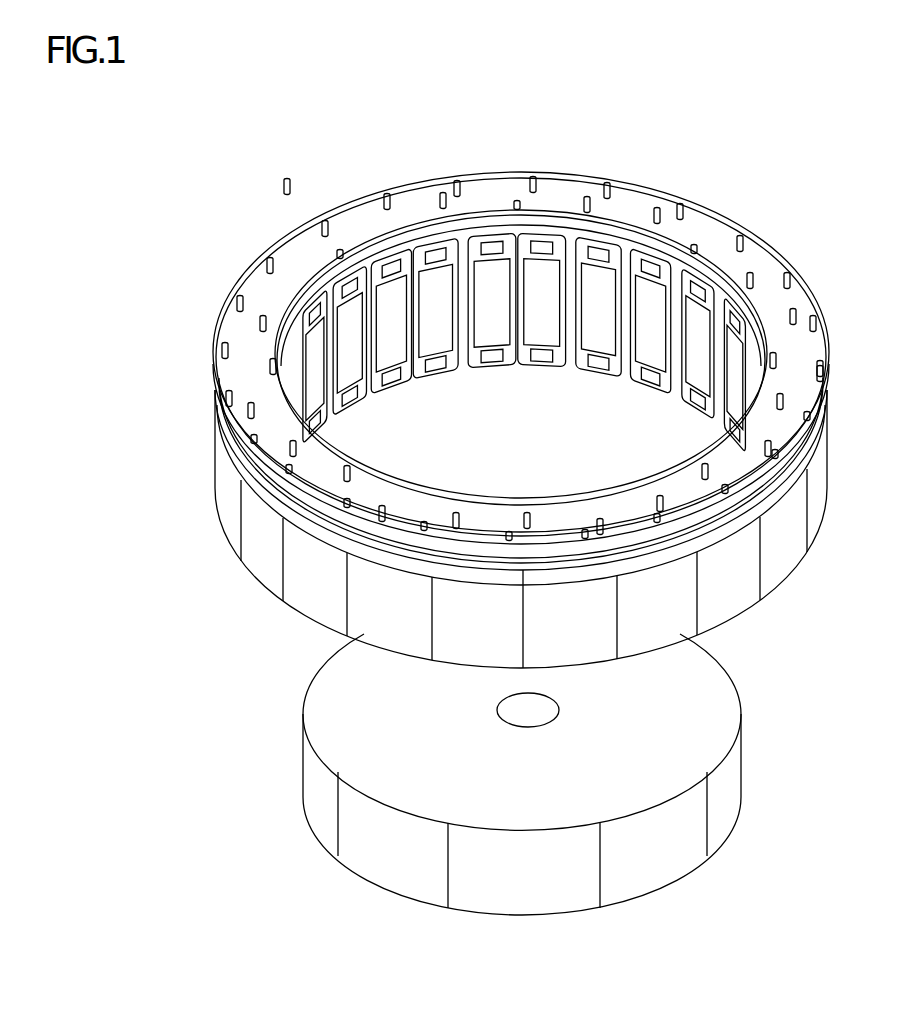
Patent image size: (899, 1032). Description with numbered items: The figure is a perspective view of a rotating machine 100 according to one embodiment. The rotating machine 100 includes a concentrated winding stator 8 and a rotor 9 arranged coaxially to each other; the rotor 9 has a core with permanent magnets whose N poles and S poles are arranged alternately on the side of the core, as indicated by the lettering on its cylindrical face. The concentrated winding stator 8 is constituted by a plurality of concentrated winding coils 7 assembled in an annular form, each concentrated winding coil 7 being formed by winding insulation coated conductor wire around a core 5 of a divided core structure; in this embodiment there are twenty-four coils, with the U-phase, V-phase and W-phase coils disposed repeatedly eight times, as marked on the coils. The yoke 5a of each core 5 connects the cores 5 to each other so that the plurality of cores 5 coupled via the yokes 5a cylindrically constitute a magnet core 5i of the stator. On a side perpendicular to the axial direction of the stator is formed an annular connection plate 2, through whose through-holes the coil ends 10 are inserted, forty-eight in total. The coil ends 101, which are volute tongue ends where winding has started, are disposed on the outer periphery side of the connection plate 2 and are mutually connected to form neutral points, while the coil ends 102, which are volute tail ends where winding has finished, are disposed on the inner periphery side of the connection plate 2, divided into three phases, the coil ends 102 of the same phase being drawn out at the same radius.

The rotating machine 100 is at (521, 122).
The concentrated winding stator 8 is at (285, 210).
The coil ends 10 is at (661, 208).
The coil end (volute tongue end) 101 is at (742, 240).
The coil end (volute tail end) 102 is at (789, 278).
The connection plate 2 is at (795, 368).
The core 5 is at (604, 333).
The concentrated winding coil 7 is at (727, 600).
The yoke 5a is at (718, 610).
The magnet core 5i is at (239, 603).
The rotor 9 is at (762, 833).